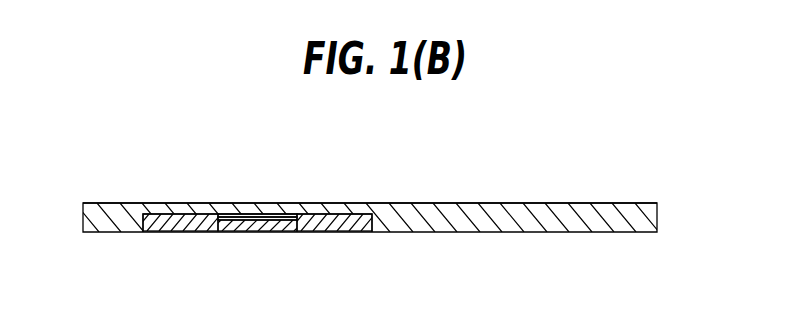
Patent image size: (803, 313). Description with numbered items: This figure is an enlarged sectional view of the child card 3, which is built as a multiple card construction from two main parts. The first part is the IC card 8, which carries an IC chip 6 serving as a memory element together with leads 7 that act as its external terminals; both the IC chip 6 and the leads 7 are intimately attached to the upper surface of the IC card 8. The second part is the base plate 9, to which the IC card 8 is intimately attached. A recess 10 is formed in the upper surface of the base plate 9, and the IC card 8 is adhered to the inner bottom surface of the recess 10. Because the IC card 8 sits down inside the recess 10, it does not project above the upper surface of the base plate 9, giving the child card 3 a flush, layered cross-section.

The child card 3 is at (562, 203).
The IC chip 6 is at (233, 214).
The leads 7 is at (175, 232).
The IC card 8 is at (258, 232).
The base plate 9 is at (442, 203).
The recess 10 is at (275, 219).